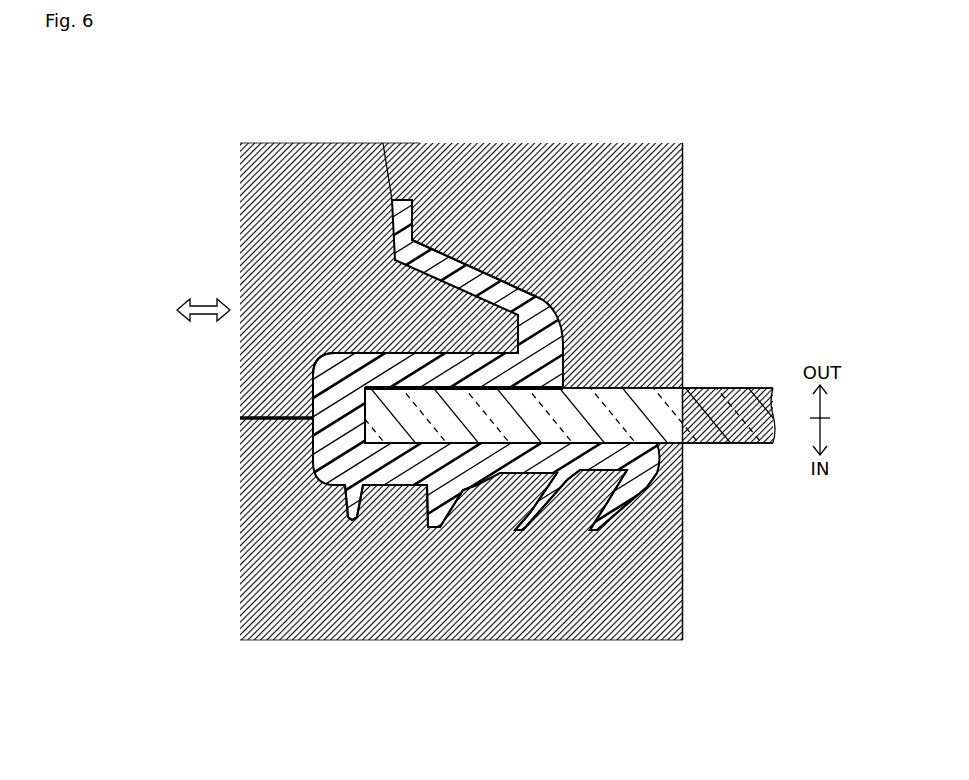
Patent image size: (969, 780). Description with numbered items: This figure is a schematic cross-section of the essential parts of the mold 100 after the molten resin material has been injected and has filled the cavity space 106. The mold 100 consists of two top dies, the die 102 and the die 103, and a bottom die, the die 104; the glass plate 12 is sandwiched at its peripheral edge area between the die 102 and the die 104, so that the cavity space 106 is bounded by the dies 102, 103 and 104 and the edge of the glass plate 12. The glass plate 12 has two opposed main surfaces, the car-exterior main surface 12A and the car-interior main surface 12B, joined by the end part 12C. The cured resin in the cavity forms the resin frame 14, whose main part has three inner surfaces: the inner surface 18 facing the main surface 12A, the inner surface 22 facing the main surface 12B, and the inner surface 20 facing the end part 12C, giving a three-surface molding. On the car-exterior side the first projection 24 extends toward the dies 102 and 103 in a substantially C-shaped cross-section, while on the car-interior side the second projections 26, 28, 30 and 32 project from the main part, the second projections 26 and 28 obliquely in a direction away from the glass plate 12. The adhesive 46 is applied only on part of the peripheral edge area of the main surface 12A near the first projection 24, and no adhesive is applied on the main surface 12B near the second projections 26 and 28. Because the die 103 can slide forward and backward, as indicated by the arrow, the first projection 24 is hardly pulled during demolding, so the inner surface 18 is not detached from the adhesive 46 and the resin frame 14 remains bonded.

The mold 100 is at (486, 67).
The die 102 is at (633, 143).
The die 103 is at (289, 143).
The die 104 is at (636, 640).
The cavity space 106 is at (313, 447).
The glass plate 12 is at (760, 380).
The main surface 12A is at (718, 388).
The main surface 12B is at (718, 443).
The end part 12C is at (364, 404).
The resin frame 14 is at (300, 388).
The inner surface 18 is at (569, 390).
The inner surface 20 is at (378, 388).
The inner surface 22 is at (498, 437).
The first projection 24 is at (398, 205).
The second projection 26 is at (596, 531).
The second projection 28 is at (520, 531).
The second projection 30 is at (434, 528).
The second projection 32 is at (352, 521).
The adhesive 46 is at (460, 388).